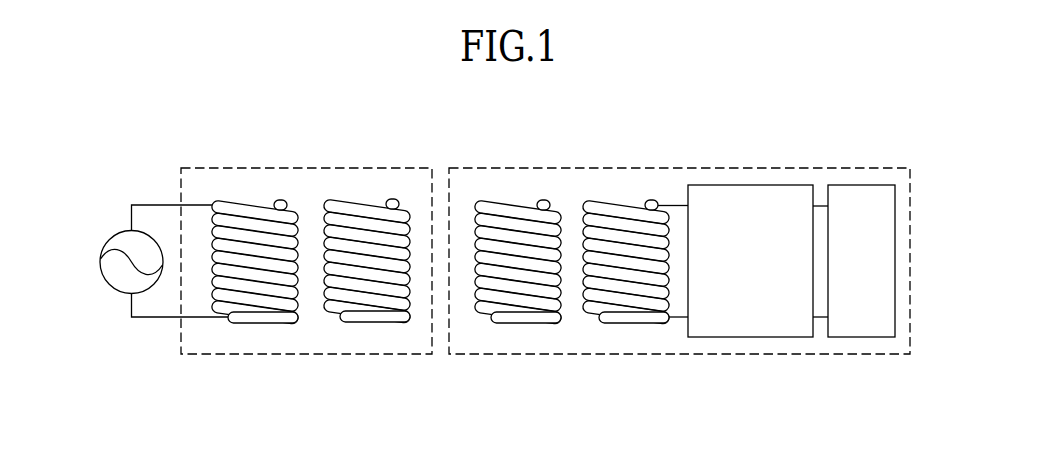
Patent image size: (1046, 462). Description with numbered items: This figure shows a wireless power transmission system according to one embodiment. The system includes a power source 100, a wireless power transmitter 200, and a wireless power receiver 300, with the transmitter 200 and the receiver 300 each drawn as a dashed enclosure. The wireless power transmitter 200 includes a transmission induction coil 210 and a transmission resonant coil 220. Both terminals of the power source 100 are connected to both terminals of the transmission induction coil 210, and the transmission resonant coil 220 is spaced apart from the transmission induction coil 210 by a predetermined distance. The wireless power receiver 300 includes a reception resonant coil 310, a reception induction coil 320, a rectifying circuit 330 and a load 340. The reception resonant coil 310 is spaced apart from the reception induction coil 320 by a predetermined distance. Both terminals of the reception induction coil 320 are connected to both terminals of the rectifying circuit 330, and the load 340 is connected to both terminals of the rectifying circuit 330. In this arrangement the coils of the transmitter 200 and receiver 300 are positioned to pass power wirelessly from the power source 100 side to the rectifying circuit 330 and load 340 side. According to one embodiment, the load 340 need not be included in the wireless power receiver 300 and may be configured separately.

The power source 100 is at (110, 241).
The wireless power transmitter 200 is at (203, 165).
The transmission induction coil 210 is at (266, 215).
The transmission resonant coil 220 is at (368, 212).
The wireless power receiver 300 is at (567, 165).
The reception resonant coil 310 is at (512, 210).
The reception induction coil 320 is at (635, 213).
The rectifying circuit 330 is at (752, 185).
The load 340 is at (860, 185).